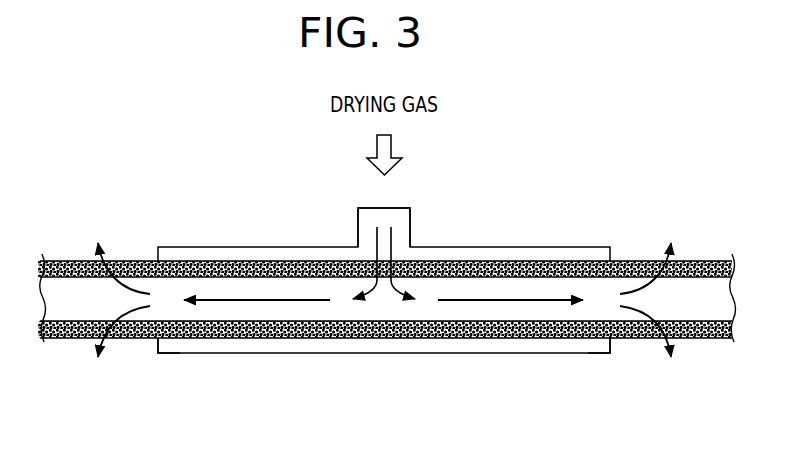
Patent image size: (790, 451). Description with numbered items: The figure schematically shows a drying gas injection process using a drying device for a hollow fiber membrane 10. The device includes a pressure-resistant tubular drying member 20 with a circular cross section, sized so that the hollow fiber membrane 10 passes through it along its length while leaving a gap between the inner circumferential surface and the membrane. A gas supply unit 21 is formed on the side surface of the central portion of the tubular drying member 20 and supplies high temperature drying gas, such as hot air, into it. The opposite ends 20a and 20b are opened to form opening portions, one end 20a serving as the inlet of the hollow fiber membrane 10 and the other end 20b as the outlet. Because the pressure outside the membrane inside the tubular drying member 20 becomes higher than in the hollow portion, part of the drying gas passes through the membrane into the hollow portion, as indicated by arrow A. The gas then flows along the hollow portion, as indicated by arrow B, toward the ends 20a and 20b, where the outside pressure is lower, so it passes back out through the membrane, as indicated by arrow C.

The hollow fiber membrane 10 is at (73, 262).
The tubular drying member 20 is at (564, 245).
The gas supply unit 21 is at (404, 208).
The one end 20a is at (157, 347).
The other end 20b is at (613, 347).
The arrow A is at (373, 256).
The arrow B is at (258, 303).
The arrow C is at (148, 307).